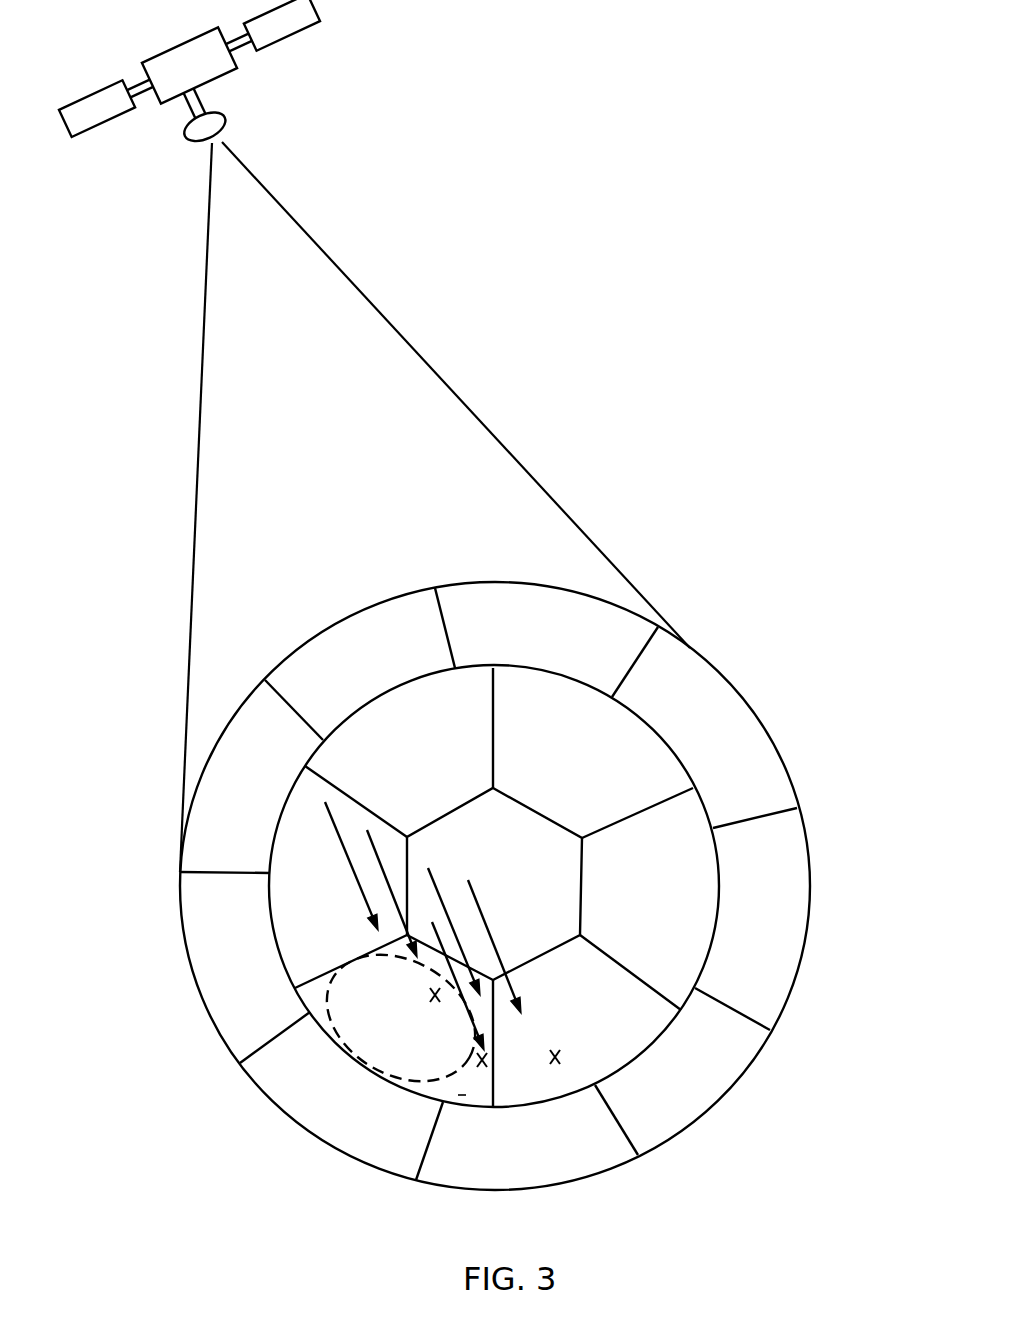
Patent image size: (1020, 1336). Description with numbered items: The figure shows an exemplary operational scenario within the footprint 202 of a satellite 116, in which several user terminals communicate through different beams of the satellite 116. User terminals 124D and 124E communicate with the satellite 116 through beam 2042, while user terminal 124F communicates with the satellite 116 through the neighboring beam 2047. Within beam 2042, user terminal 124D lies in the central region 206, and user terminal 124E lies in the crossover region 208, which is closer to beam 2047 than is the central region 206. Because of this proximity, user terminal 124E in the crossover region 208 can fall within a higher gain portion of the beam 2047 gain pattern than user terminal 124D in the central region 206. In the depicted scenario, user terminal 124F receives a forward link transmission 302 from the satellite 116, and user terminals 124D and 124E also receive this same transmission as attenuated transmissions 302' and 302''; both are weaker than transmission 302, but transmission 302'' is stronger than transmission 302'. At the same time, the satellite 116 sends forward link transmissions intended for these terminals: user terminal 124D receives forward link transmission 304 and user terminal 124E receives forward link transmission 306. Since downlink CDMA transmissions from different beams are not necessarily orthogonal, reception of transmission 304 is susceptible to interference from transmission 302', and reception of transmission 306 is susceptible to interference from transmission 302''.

The satellite 116 is at (290, 42).
The footprint 202 is at (738, 690).
The forward link transmission 304 is at (349, 856).
The attenuated transmission 302' is at (357, 893).
The forward link transmission 306 is at (428, 868).
The forward link transmission 302 is at (503, 941).
The attenuated transmission 302'' is at (495, 978).
The beam 2042 is at (409, 1016).
The beam 2047 is at (569, 1016).
The user terminal 124D is at (432, 994).
The user terminal 124E is at (482, 1067).
The user terminal 124F is at (557, 1064).
The central region 206 is at (434, 1064).
The crossover region 208 is at (465, 1095).